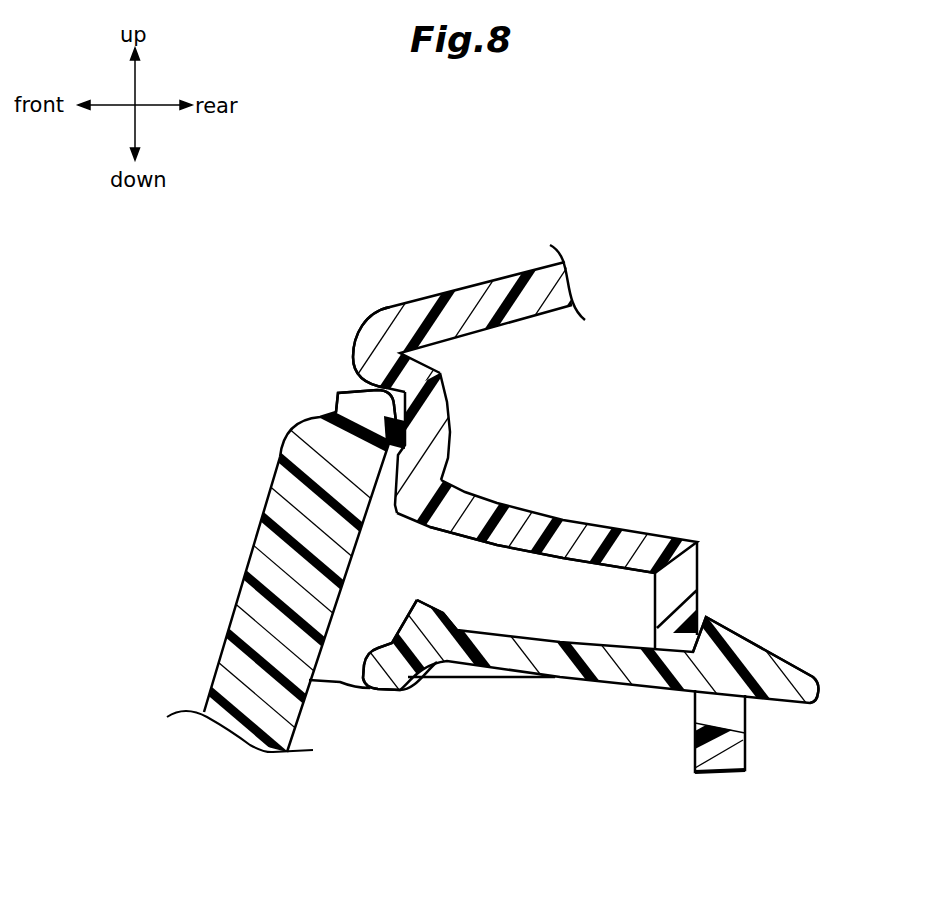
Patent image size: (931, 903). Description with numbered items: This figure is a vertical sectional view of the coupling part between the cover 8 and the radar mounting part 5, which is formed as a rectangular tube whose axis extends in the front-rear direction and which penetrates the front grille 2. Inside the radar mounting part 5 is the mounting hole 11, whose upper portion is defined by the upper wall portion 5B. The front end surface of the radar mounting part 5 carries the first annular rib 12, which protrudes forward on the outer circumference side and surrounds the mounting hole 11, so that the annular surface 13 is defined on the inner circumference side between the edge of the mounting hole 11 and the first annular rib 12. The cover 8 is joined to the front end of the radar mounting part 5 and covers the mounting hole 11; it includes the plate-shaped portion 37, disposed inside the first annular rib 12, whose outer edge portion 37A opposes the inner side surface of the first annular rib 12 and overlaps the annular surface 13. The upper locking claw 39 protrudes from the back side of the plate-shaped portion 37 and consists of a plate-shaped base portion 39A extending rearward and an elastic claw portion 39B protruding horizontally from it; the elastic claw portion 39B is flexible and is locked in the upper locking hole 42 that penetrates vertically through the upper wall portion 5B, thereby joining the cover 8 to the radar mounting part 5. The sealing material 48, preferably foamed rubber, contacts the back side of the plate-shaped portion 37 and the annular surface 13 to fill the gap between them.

The front grille 2 is at (528, 245).
The radar mounting part 5 is at (457, 277).
The upper wall portion 5B is at (577, 527).
The cover 8 is at (260, 496).
The mounting hole 11 is at (460, 533).
The first annular rib 12 is at (368, 337).
The annular surface 13 is at (397, 505).
The plate-shaped portion 37 is at (253, 625).
The outer edge portion 37A is at (347, 407).
The upper locking claw 39 is at (502, 680).
The base portion 39A is at (457, 650).
The elastic claw portion 39B is at (717, 633).
The upper locking hole 42 is at (667, 637).
The sealing material 48 is at (400, 463).